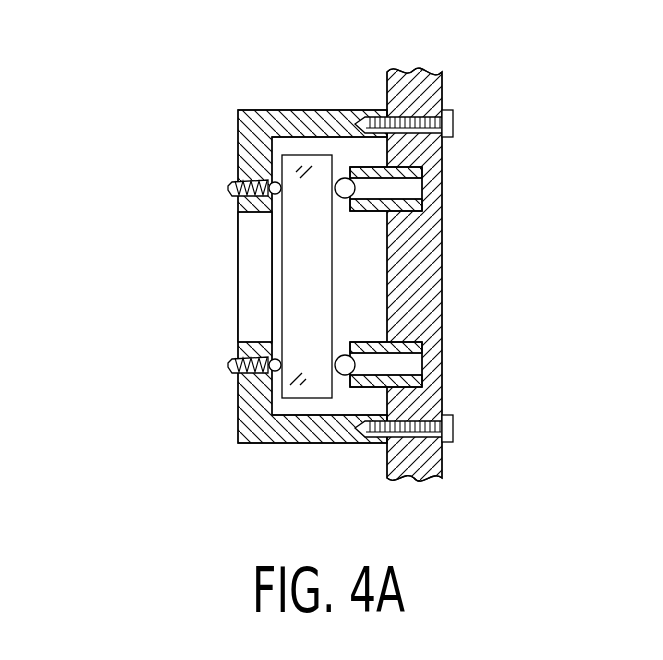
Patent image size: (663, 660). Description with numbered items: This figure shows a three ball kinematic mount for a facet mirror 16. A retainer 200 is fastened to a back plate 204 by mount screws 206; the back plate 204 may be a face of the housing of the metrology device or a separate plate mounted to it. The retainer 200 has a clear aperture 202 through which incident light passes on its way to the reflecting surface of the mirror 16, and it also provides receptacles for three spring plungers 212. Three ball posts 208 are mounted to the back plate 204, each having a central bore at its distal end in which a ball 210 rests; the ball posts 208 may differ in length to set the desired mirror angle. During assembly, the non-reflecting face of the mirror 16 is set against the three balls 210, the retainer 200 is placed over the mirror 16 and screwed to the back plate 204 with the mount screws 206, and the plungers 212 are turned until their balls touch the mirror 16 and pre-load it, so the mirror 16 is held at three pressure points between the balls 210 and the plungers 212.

The facet mirror 16 is at (300, 162).
The retainer 200 is at (262, 433).
The clear aperture 202 is at (222, 275).
The back plate 204 is at (420, 92).
The mount screws 206 is at (442, 110).
The ball posts 208 is at (413, 207).
The ball 210 is at (350, 196).
The spring plungers 212 is at (237, 178).